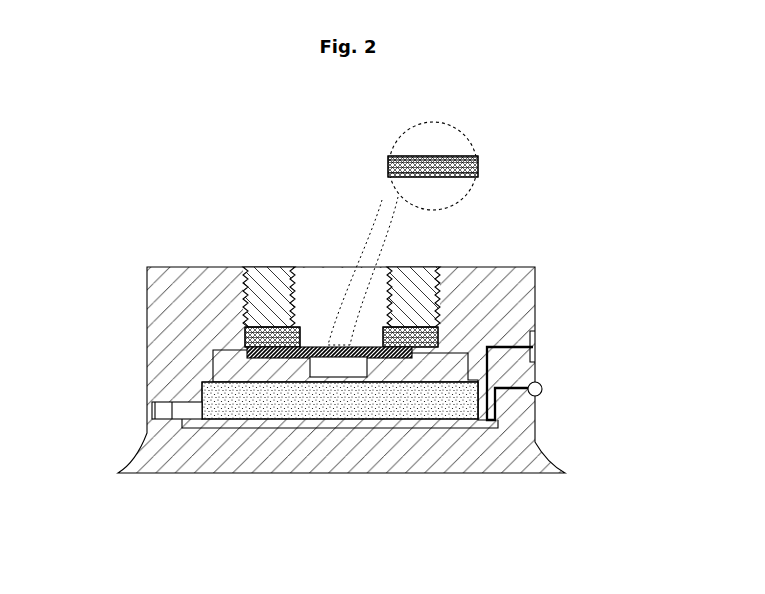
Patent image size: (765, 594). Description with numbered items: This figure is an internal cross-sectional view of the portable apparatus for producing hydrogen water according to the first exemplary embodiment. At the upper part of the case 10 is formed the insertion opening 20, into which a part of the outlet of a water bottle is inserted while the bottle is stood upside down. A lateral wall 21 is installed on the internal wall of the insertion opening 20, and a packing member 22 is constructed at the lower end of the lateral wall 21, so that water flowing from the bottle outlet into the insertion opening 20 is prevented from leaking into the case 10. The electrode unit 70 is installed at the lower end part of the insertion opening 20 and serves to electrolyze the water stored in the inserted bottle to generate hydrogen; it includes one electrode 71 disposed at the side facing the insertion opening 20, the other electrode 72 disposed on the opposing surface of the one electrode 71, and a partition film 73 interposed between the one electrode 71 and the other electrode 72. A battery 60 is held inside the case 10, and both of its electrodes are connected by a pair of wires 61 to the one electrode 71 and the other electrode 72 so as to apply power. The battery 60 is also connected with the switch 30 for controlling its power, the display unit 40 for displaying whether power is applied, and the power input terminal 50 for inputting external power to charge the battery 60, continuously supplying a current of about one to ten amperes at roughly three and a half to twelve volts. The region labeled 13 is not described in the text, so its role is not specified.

The case 10 is at (545, 280).
The sensor chip 13 is at (372, 362).
The insertion opening 20 is at (325, 288).
The lateral wall 21 is at (262, 267).
The packing member 22 is at (250, 348).
The switch 30 is at (537, 338).
The display unit 40 is at (542, 391).
The power input terminal 50 is at (152, 404).
The battery 60 is at (287, 405).
The wires 61 is at (213, 372).
The electrode unit 70 is at (447, 155).
The one electrode 71 is at (457, 155).
The other electrode 72 is at (470, 177).
The partition film 73 is at (478, 166).